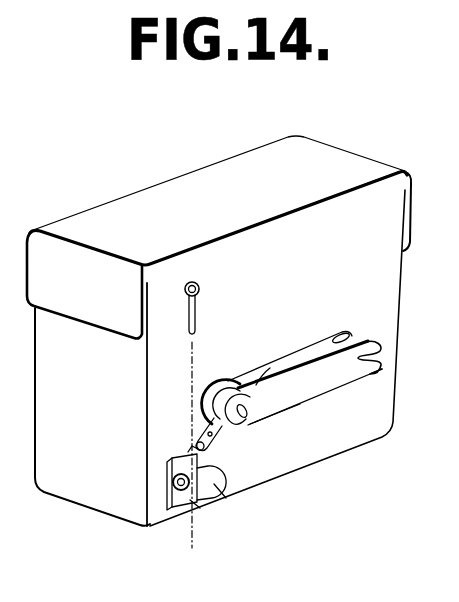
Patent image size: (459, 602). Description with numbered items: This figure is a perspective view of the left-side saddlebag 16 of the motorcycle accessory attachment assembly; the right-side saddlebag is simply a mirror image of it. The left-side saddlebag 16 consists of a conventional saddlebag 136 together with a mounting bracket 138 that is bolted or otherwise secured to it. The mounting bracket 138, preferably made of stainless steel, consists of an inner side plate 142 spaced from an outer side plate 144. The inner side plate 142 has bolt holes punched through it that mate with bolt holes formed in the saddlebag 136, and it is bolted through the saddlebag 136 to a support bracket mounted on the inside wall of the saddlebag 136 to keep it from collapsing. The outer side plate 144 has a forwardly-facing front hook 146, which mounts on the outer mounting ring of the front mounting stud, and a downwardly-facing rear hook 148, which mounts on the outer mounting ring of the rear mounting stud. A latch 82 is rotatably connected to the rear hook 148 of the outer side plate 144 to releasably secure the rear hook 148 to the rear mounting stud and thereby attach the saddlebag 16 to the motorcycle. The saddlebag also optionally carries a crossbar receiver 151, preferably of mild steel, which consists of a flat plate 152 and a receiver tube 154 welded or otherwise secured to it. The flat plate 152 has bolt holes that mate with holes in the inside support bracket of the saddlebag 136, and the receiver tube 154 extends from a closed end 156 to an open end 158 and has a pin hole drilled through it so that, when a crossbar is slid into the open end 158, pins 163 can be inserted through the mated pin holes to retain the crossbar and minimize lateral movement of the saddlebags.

The left-side saddlebag 16 is at (208, 160).
The saddlebag 136 is at (334, 212).
The pins 163 is at (196, 301).
The mounting bracket 138 is at (334, 392).
The front hook 146 is at (369, 342).
The rear hook 148 is at (264, 374).
The outer side plate 144 is at (302, 400).
The inner side plate 142 is at (224, 381).
The latch 82 is at (202, 422).
The flat plate 152 is at (192, 459).
The open end 158 is at (175, 484).
The closed end 156 is at (202, 471).
The crossbar receiver 151 is at (215, 499).
The receiver tube 154 is at (198, 506).